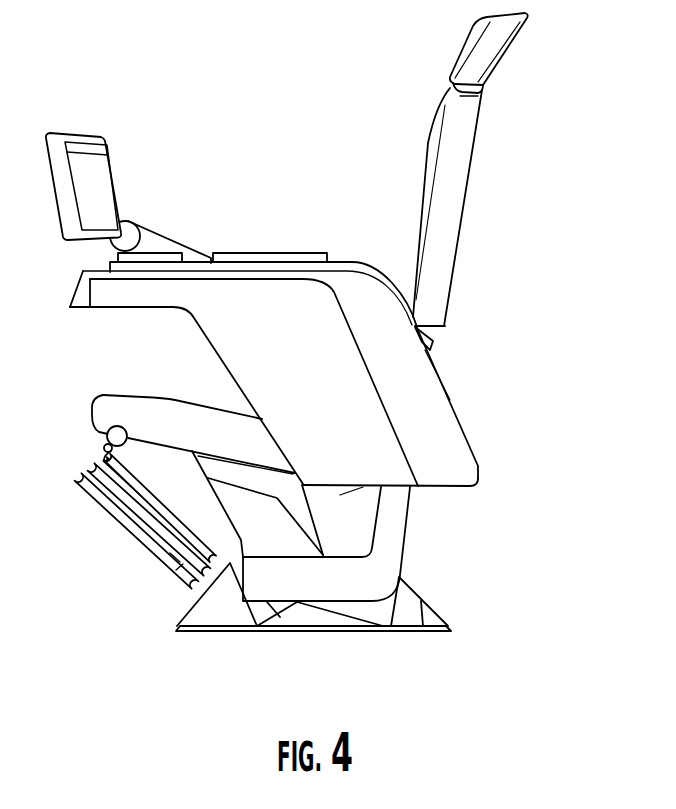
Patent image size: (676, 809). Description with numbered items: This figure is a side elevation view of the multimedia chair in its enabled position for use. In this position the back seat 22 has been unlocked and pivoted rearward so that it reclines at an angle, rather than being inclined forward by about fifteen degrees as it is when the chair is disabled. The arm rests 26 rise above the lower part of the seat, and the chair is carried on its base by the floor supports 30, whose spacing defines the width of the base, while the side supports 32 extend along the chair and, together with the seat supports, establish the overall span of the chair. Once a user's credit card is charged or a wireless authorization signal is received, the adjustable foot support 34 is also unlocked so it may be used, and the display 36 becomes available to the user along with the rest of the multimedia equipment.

The back seat 22 is at (480, 178).
The arm rests 26 is at (443, 418).
The floor supports 30 is at (425, 630).
The side supports 32 is at (406, 512).
The adjustable foot support 34 is at (107, 517).
The display 36 is at (100, 133).